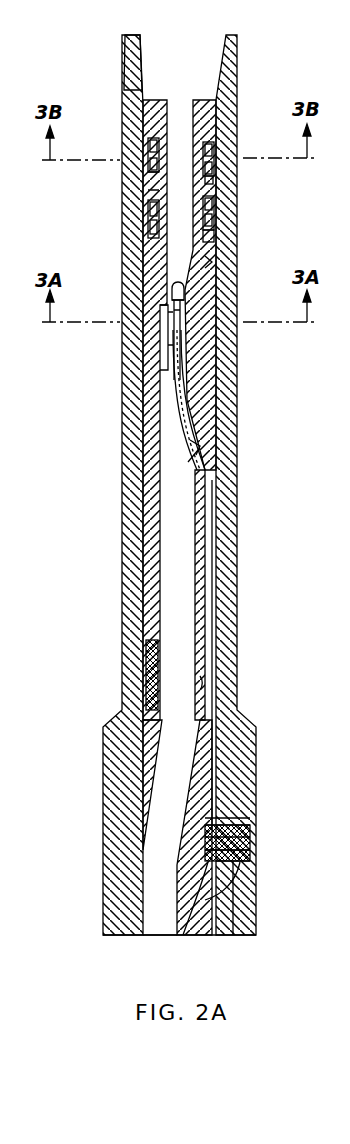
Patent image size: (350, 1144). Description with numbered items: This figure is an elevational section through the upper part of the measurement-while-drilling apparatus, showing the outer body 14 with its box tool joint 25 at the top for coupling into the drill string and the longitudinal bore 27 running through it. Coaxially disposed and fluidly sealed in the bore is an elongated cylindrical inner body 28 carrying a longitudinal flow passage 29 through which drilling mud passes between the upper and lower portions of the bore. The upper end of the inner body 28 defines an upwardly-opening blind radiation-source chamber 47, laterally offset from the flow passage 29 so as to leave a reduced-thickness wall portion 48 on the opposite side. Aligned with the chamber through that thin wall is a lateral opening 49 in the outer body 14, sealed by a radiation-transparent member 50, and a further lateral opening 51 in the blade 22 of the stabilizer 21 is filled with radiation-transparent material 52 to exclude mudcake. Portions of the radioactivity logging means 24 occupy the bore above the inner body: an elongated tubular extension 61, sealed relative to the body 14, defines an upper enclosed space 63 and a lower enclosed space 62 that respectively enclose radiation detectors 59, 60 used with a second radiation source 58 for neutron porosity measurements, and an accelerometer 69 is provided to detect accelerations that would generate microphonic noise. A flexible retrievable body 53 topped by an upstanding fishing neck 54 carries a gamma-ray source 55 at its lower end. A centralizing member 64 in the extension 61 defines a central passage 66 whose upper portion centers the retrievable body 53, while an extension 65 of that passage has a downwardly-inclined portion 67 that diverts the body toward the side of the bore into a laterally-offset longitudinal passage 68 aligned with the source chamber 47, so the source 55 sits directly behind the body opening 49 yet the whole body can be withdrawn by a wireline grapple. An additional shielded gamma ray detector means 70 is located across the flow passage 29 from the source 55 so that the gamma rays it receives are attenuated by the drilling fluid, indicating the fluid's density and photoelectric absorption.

The body 14 is at (236, 490).
The stabilizer 21 is at (92, 921).
The blade 22 is at (236, 747).
The radioactivity logging means 24 is at (256, 66).
The box tool joint 25 is at (142, 44).
The longitudinal bore 27 is at (192, 75).
The elongated cylindrical body 28 is at (143, 532).
The longitudinal flow passage 29 is at (160, 578).
The radiation-source chamber 47 is at (233, 886).
The reduced-thickness wall portion 48 is at (250, 828).
The lateral opening 49 is at (248, 810).
The radiation-transparent member 50 is at (250, 850).
The lateral opening 51 is at (250, 870).
The radiation-transparent material 52 is at (250, 840).
The retrievable body 53 is at (212, 522).
The fishing neck 54 is at (186, 290).
The source of gamma-ray energy 55 is at (185, 930).
The second radiation source 58 is at (168, 330).
The radiation detector 59 is at (148, 214).
The radiation detector 60 is at (150, 142).
The elongated tubular extension 61 is at (183, 362).
The lower enclosed space 62 is at (145, 176).
The upper enclosed space 63 is at (214, 176).
The centralizing member 64 is at (207, 428).
The extension of the central passage 65 is at (196, 456).
The central passage 66 is at (173, 362).
The downwardly-inclined portion 67 is at (208, 446).
The laterally-offset longitudinal passage 68 is at (205, 683).
The accelerometer 69 is at (212, 262).
The gamma ray detector means 70 is at (146, 682).